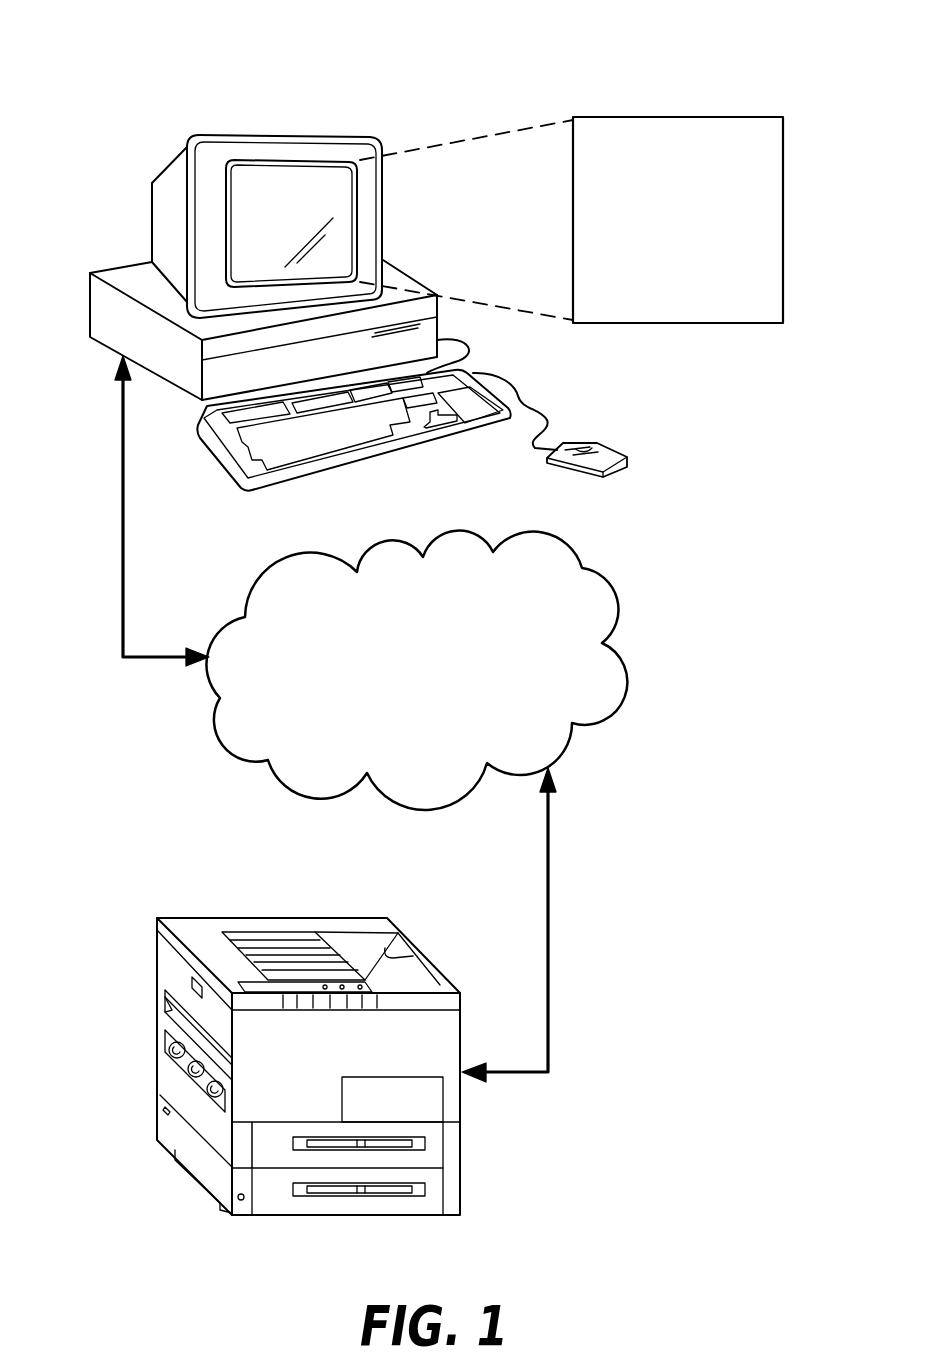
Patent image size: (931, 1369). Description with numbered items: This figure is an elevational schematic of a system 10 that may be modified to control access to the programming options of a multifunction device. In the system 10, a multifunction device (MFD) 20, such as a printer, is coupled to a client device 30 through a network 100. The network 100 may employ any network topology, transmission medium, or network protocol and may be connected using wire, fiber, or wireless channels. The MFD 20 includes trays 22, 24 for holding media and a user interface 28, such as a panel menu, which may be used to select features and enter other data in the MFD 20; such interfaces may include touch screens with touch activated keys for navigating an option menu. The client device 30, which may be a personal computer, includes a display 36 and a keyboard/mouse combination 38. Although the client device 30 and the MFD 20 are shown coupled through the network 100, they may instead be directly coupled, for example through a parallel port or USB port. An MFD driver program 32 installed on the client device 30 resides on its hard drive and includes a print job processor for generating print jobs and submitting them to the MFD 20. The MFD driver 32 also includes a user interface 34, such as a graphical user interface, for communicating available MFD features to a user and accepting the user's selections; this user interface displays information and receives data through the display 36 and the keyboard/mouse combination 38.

The system 10 is at (544, 53).
The multifunction device 20 is at (157, 943).
The tray 22 is at (435, 1145).
The tray 24 is at (391, 1205).
The user interface 28 is at (365, 982).
The client device 30 is at (150, 215).
The MFD driver program 32 is at (90, 300).
The user interface 34 is at (783, 147).
The display 36 is at (274, 181).
The keyboard/mouse combination 38 is at (567, 401).
The network 100 is at (630, 654).